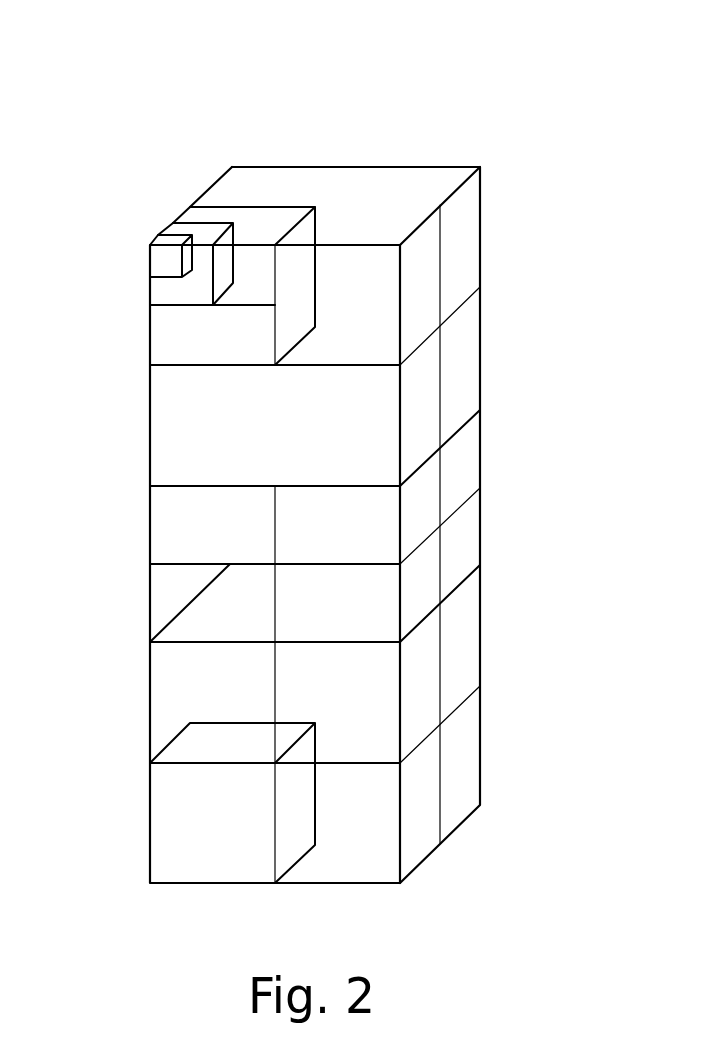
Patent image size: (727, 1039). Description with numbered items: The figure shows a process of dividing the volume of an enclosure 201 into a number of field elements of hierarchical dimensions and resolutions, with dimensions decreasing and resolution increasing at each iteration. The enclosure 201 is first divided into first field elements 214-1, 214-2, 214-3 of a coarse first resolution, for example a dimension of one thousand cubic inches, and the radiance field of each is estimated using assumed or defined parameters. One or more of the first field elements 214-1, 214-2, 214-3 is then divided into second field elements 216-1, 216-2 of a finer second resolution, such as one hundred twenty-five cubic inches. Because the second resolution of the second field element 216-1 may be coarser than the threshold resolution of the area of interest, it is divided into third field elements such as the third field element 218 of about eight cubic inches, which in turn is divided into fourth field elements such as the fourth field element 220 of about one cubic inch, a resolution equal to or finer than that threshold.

The enclosure 201 is at (450, 78).
The first field element 214-1 is at (500, 165).
The first field element 214-2 is at (127, 487).
The first field element 214-3 is at (498, 567).
The second field element 216-1 is at (292, 277).
The second field element 216-2 is at (235, 747).
The third field element 218 is at (202, 232).
The fourth field element 220 is at (157, 258).